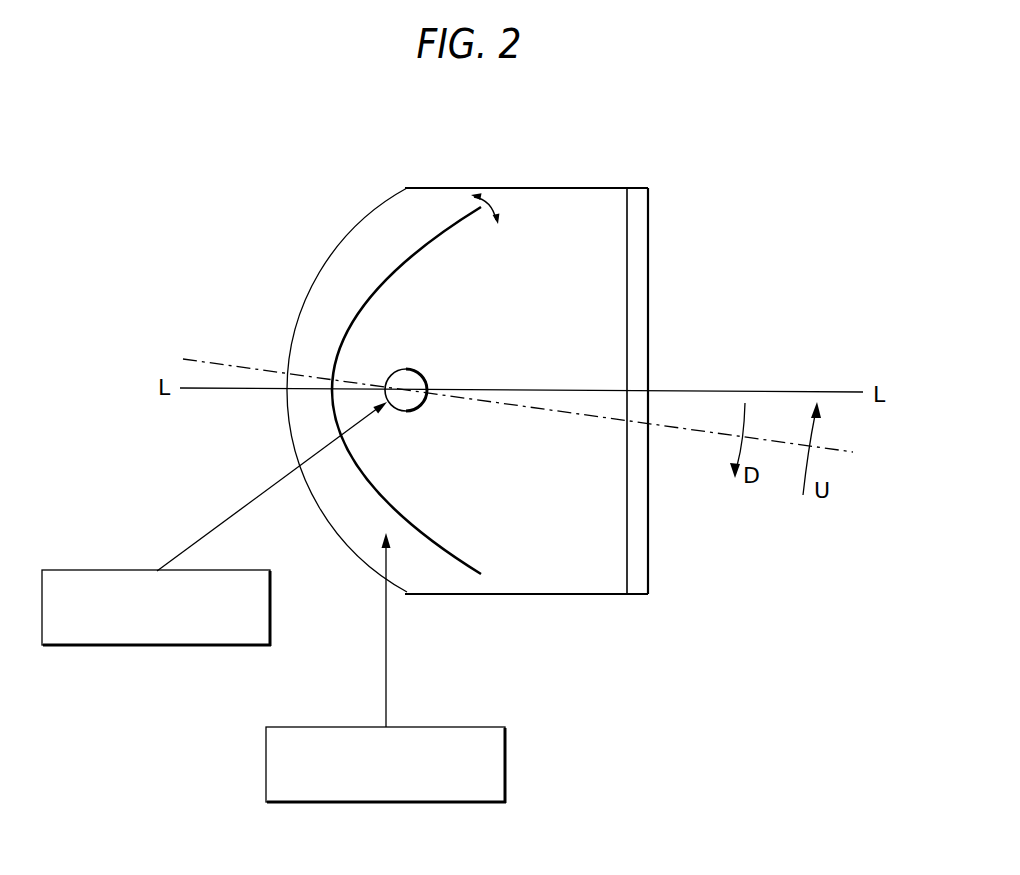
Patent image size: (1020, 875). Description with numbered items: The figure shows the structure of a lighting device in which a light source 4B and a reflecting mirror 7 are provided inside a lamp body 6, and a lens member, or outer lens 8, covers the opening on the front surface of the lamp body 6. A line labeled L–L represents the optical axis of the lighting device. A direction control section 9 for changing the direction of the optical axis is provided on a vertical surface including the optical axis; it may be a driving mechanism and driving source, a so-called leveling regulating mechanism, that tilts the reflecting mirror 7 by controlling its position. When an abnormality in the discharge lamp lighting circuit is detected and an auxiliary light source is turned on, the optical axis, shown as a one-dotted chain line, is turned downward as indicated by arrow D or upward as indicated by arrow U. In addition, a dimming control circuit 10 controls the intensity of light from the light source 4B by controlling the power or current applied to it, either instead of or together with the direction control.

The light source 4B is at (398, 380).
The lamp body 6 is at (563, 188).
The reflecting mirror 7 is at (413, 253).
The lens member (outer lens) 8 is at (638, 188).
The direction control section 9 is at (505, 760).
The dimming control circuit 10 is at (270, 608).